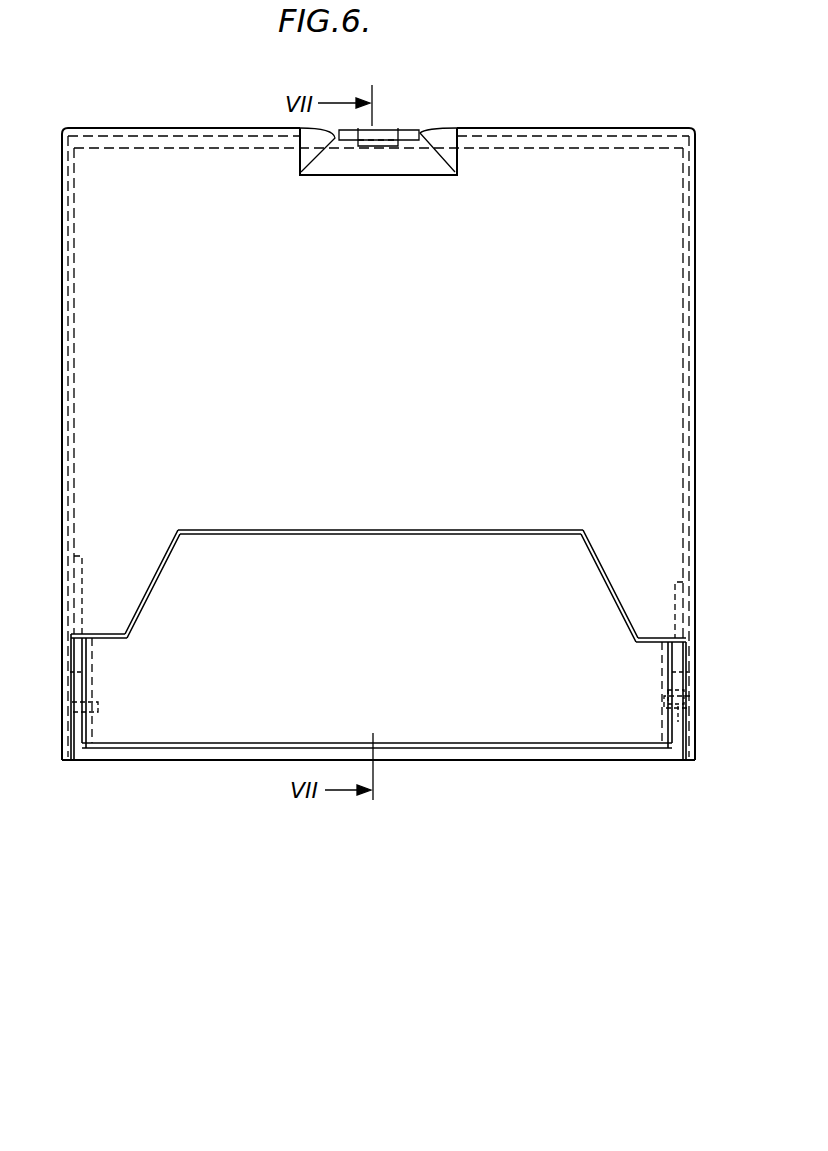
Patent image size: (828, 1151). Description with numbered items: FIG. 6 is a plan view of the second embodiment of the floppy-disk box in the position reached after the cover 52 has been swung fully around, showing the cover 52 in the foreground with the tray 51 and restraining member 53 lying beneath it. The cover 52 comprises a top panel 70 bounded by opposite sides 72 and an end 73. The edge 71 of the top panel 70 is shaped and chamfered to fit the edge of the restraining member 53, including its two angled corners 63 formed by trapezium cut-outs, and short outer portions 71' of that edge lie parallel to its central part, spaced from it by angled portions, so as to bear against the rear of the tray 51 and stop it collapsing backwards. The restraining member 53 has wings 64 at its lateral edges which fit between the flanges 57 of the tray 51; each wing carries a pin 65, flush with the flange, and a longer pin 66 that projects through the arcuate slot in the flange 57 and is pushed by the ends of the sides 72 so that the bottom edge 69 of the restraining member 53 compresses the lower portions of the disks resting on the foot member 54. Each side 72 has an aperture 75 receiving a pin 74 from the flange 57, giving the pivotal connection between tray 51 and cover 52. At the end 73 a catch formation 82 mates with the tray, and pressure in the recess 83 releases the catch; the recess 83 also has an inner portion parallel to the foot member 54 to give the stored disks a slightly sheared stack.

The tray 51 is at (502, 770).
The cover 52 is at (633, 385).
The restraining member 53 is at (538, 703).
The foot member 54 is at (420, 762).
The flange 57 is at (70, 762).
The angled corner 63 is at (150, 594).
The wing 64 is at (74, 728).
The pin 65 is at (74, 676).
The pin 66 is at (70, 645).
The bottom edge 69 is at (180, 722).
The top panel 70 is at (420, 391).
The edge 71 is at (380, 507).
The outer portion of edge 71' is at (378, 581).
The side 72 is at (62, 186).
The end 73 is at (493, 128).
The pin 74 is at (690, 698).
The aperture 75 is at (683, 722).
The catch formation 82 is at (380, 133).
The recess 83 is at (412, 162).